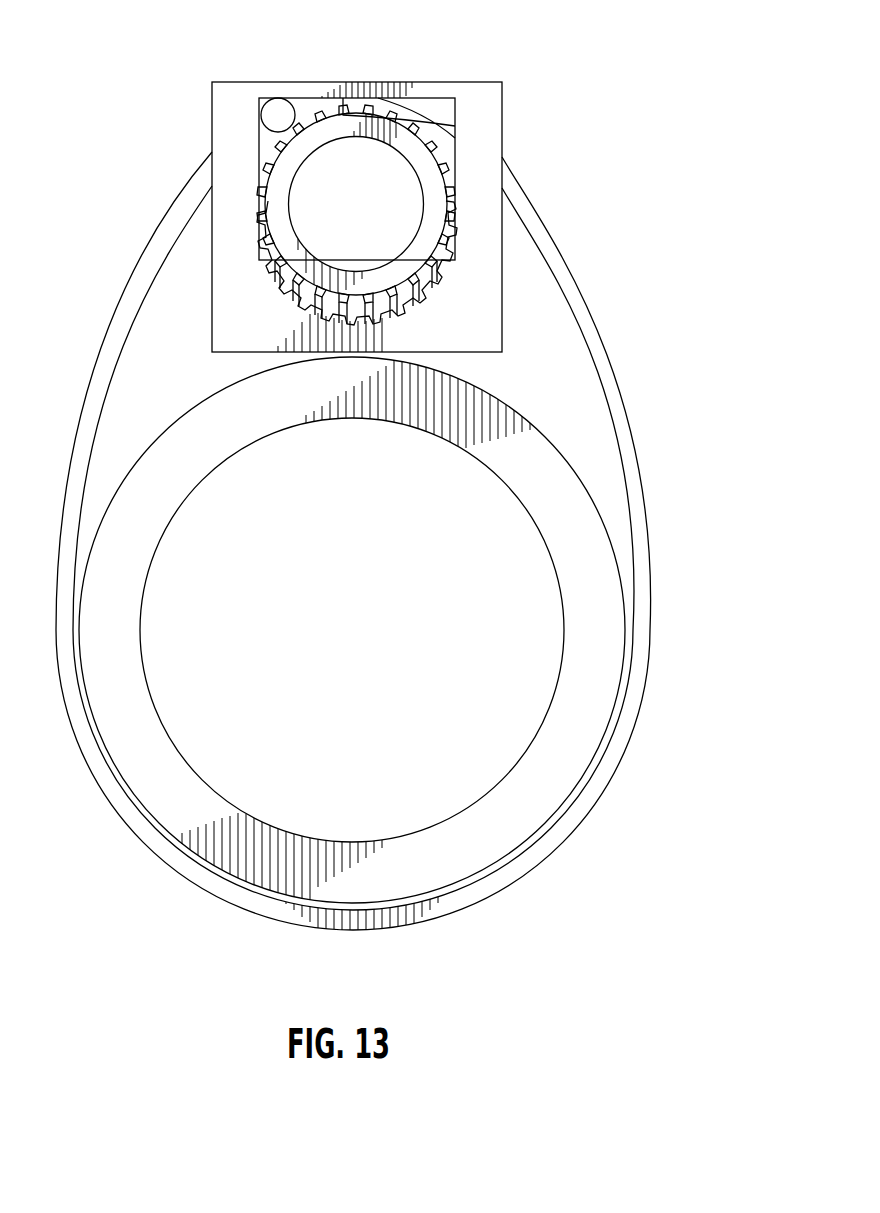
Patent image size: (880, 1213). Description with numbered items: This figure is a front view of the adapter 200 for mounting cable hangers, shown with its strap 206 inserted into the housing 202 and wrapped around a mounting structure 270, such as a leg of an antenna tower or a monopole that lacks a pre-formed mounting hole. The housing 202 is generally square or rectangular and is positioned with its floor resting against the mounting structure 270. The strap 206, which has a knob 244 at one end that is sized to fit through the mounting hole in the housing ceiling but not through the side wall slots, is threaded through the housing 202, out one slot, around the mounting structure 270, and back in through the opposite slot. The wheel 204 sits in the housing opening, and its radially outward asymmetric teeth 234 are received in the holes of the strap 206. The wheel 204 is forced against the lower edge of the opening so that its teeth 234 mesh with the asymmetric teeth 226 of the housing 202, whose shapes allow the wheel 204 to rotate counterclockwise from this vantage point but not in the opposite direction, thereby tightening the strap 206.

The adapter 200 is at (410, 483).
The housing 202 is at (485, 152).
The wheel 204 is at (280, 231).
The strap 206 is at (637, 540).
The asymmetric teeth 226 is at (298, 300).
The asymmetric teeth 234 is at (265, 172).
The knob 244 is at (279, 116).
The mounting structure 270 is at (598, 672).